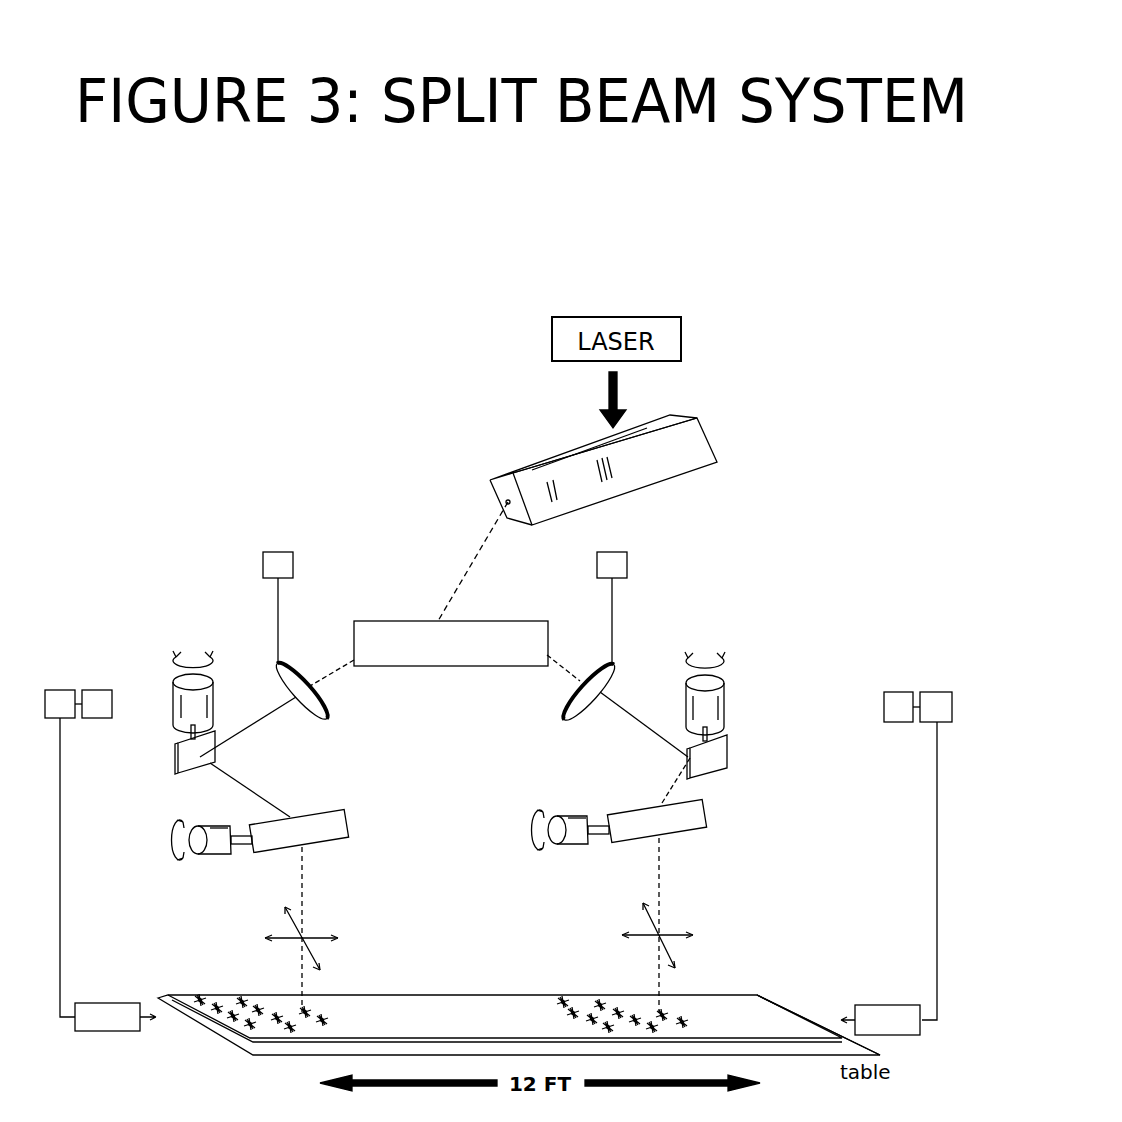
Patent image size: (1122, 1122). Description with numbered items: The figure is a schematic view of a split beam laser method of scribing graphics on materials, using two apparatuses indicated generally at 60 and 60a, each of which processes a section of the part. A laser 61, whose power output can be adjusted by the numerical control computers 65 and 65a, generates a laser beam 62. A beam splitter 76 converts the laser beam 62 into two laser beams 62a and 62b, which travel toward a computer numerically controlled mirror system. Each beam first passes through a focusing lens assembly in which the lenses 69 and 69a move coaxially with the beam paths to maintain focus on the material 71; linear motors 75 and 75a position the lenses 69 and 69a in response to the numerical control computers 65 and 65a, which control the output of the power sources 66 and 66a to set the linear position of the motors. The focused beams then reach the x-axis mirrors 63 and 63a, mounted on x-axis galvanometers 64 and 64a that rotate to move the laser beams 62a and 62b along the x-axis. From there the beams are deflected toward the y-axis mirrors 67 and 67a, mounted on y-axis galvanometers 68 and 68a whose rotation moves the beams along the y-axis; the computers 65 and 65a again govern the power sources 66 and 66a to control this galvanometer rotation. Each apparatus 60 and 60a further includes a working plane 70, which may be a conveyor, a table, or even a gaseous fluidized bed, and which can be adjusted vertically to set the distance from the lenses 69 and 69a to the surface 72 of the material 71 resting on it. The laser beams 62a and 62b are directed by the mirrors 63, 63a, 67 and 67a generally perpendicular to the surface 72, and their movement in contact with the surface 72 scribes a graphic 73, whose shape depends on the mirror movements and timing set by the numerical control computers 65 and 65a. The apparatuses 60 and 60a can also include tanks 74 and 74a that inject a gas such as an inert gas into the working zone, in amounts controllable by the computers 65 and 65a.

The apparatus 60 is at (78, 833).
The apparatus 60a is at (922, 836).
The laser 61 is at (543, 470).
The laser beam 62 is at (472, 572).
The laser beam 62a is at (298, 975).
The laser beam 62b is at (657, 975).
The x-axis mirror 63 is at (178, 755).
The x-axis mirror 63a is at (722, 755).
The x-axis galvanometer 64 is at (207, 702).
The x-axis galvanometer 64a is at (715, 707).
The numerical control computer 65 is at (60, 704).
The numerical control computer 65a is at (898, 707).
The power source 66 is at (72, 672).
The power source 66a is at (928, 682).
The y-axis mirror 67 is at (340, 825).
The y-axis mirror 67a is at (700, 820).
The y-axis galvanometer 68 is at (215, 845).
The y-axis galvanometer 68a is at (570, 838).
The lens 69 is at (322, 705).
The lens 69a is at (567, 702).
The working plane 70 is at (787, 1050).
The material 71 is at (757, 995).
The surface 72 is at (728, 1012).
The graphic 73 is at (557, 995).
The tank 74 is at (115, 1017).
The tank 74a is at (880, 1020).
The linear motor 75 is at (278, 607).
The linear motor 75a is at (612, 608).
The beam splitter 76 is at (543, 630).